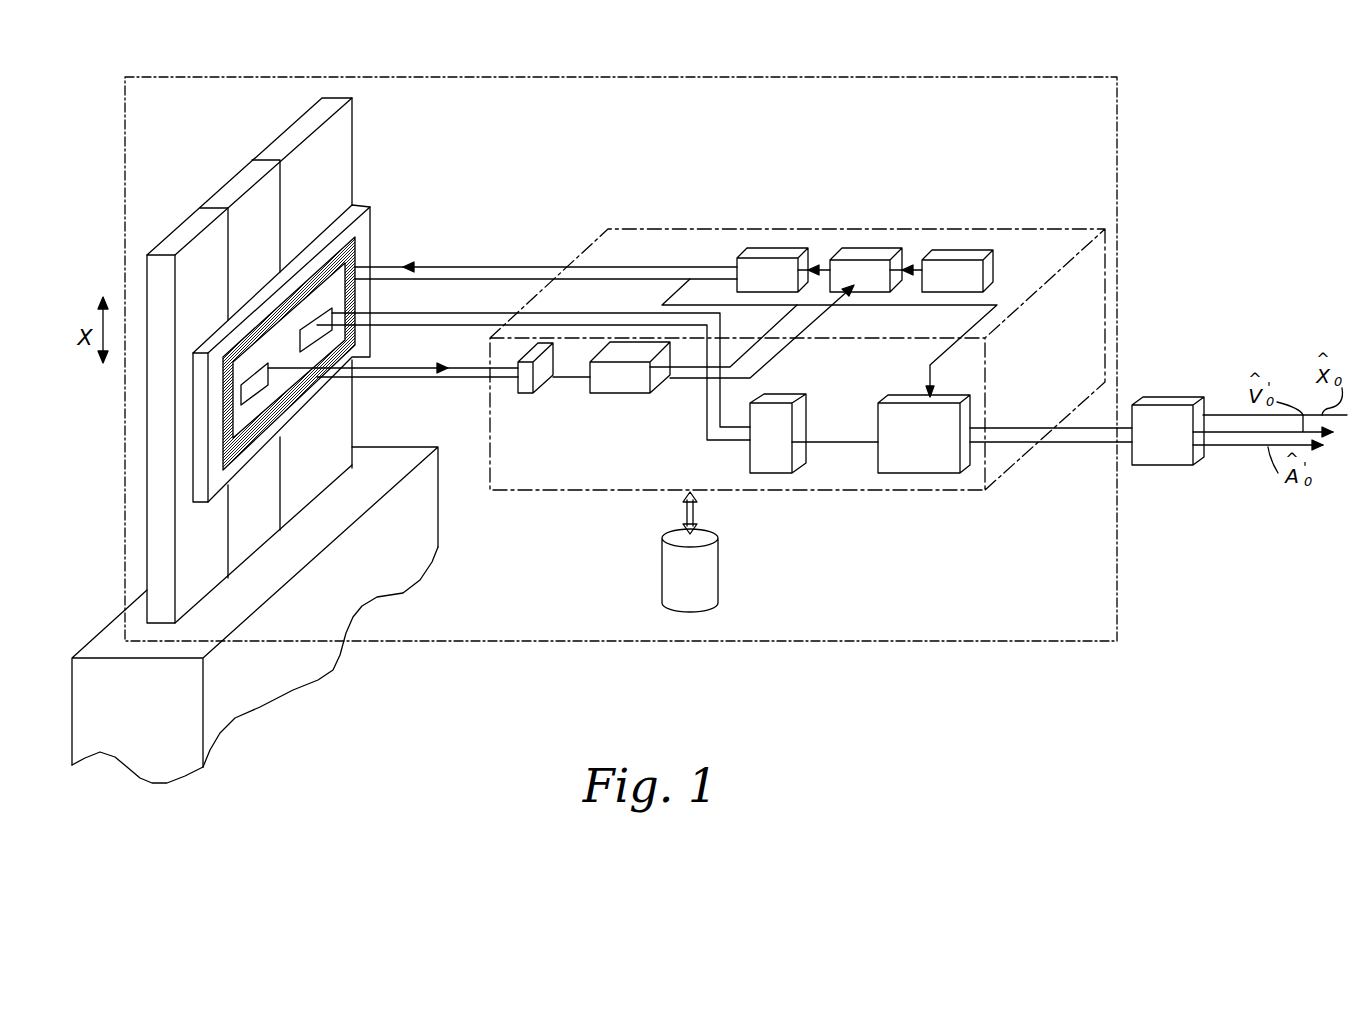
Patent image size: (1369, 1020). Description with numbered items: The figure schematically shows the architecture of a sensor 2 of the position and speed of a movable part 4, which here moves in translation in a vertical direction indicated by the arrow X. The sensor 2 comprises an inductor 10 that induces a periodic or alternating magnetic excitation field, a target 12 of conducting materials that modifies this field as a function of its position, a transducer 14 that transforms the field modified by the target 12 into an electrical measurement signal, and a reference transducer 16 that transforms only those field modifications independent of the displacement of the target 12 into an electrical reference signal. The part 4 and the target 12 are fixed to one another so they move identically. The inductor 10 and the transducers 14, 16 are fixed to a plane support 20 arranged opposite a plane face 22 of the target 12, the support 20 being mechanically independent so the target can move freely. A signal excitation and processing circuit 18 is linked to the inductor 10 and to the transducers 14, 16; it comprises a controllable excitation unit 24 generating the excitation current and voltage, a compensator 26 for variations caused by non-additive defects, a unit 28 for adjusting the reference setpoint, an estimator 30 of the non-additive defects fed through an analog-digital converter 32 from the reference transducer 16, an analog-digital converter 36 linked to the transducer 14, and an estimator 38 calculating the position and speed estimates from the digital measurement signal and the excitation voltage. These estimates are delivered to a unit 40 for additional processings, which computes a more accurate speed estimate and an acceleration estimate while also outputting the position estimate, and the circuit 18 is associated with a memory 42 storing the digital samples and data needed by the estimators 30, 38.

The sensor 2 is at (956, 646).
The movable part 4 is at (234, 685).
The inductor 10 is at (355, 253).
The target 12 is at (269, 134).
The transducer 14 is at (393, 325).
The reference transducer 16 is at (242, 388).
The signal excitation and processing circuit 18 is at (630, 490).
The plane support 20 is at (359, 205).
The plane face 22 is at (335, 140).
The controllable excitation unit 24 is at (770, 250).
The compensator 26 is at (863, 250).
The unit for adjusting the reference setpoint 28 is at (953, 250).
The estimator 30 is at (623, 385).
The analog-digital converter 32 is at (525, 385).
The analog-digital converter 36 is at (778, 463).
The estimator 38 is at (918, 463).
The unit for additional processings 40 is at (1167, 400).
The memory 42 is at (708, 572).